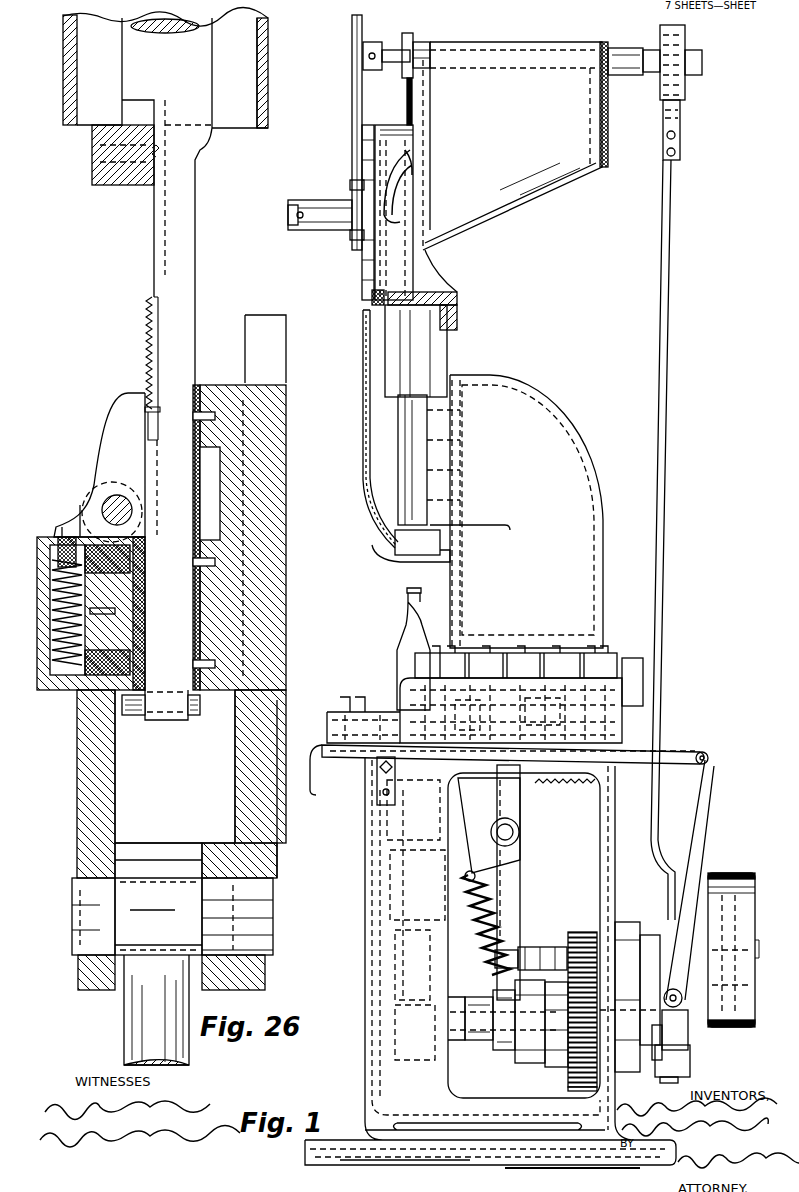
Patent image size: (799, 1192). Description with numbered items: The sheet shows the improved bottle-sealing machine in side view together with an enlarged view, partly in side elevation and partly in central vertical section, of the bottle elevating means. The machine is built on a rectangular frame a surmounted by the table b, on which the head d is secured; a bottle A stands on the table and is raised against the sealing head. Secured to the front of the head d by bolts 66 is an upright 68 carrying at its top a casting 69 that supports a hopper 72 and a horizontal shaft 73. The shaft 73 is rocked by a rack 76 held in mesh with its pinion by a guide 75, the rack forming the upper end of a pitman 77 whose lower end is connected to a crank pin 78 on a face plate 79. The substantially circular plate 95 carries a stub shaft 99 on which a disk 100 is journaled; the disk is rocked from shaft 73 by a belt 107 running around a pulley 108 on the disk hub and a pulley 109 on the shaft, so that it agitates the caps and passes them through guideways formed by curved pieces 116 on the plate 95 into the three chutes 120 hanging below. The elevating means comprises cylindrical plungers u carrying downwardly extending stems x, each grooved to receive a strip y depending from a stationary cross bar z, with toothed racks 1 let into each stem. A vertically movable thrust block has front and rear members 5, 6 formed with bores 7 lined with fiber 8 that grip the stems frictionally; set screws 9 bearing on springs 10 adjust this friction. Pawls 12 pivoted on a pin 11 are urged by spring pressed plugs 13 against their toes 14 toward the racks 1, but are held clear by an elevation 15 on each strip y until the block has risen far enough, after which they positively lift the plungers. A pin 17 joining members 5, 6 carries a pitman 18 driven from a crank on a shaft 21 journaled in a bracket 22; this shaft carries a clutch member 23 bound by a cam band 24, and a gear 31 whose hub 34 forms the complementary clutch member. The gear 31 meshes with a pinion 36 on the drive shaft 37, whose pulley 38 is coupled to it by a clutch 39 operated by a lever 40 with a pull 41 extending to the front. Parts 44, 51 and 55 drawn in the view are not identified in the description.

In FIG. 26, the cylindrical plunger u is at (268, 98).
In FIG. 26, the stationary cross bar z is at (118, 185).
In FIG. 26, the vertical strip y is at (155, 213).
In FIG. 26, the stem x is at (193, 252).
In FIG. 26, the toothed rack 1 is at (158, 280).
In FIG. 26, the elevation 15 is at (145, 338).
In FIG. 26, the pawl 12 is at (112, 448).
In FIG. 26, the toe 14 is at (80, 505).
In FIG. 26, the spring pressed plug 13 is at (62, 527).
In FIG. 26, the pin 11 is at (108, 520).
In FIG. 26, the set screw 9 is at (45, 545).
In FIG. 26, the fiber lining 8 is at (200, 596).
In FIG. 26, the bore 7 is at (200, 620).
In FIG. 26, the spring 10 is at (75, 695).
In FIG. 26, the front member of thrust block 5 is at (108, 805).
In FIG. 26, the rear member of thrust block 6 is at (235, 808).
In FIG. 26, the pin 17 is at (263, 925).
In FIG. 26, the pitman 18 is at (124, 1030).
In FIG. 1, the pulley 109 is at (352, 78).
In FIG. 1, the belt 107 is at (375, 137).
In FIG. 1, the curved piece 116 is at (410, 205).
In FIG. 1, the circular plate 95 is at (365, 275).
In FIG. 1, the disk 100 is at (372, 298).
In FIG. 1, the pulley 108 is at (352, 245).
In FIG. 1, the stub shaft 99 is at (292, 230).
In FIG. 1, the hopper 72 is at (515, 205).
In FIG. 1, the horizontal shaft 73 is at (552, 62).
In FIG. 1, the guide 75 is at (660, 92).
In FIG. 1, the rack 76 is at (663, 122).
In FIG. 1, the pitman 77 is at (662, 523).
In FIG. 1, the casting 69 is at (450, 300).
In FIG. 1, the upright 68 is at (447, 357).
In FIG. 1, the chute 120 is at (362, 417).
In FIG. 1, the bolt 66 is at (400, 430).
In FIG. 1, the head d is at (603, 600).
In FIG. 1, the bottle A is at (405, 633).
In FIG. 1, the pull 41 is at (359, 757).
In FIG. 1, the table b is at (620, 752).
In FIG. 1, the rectangular frame a is at (615, 865).
In FIG. 1, the lever 44 is at (523, 808).
In FIG. 1, the serrated segment 51 is at (590, 788).
In FIG. 1, the spring 55 is at (500, 900).
In FIG. 1, the drive shaft 37 is at (540, 947).
In FIG. 1, the pinion 36 is at (583, 932).
In FIG. 1, the hub of gear 34 is at (555, 1067).
In FIG. 1, the band 24 is at (530, 1021).
In FIG. 1, the clutch member 23 is at (505, 1050).
In FIG. 1, the shaft 21 is at (480, 1045).
In FIG. 1, the bracket 22 is at (468, 1033).
In FIG. 1, the gear 31 is at (582, 1091).
In FIG. 1, the lever 40 is at (700, 845).
In FIG. 1, the clutch 39 is at (680, 1010).
In FIG. 1, the crank pin 78 is at (690, 1068).
In FIG. 1, the face plate 79 is at (655, 1080).
In FIG. 1, the pulley 38 is at (738, 876).